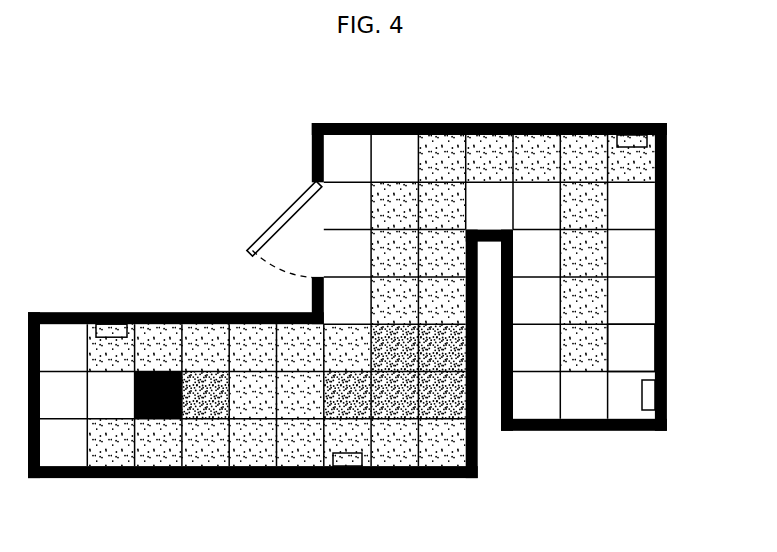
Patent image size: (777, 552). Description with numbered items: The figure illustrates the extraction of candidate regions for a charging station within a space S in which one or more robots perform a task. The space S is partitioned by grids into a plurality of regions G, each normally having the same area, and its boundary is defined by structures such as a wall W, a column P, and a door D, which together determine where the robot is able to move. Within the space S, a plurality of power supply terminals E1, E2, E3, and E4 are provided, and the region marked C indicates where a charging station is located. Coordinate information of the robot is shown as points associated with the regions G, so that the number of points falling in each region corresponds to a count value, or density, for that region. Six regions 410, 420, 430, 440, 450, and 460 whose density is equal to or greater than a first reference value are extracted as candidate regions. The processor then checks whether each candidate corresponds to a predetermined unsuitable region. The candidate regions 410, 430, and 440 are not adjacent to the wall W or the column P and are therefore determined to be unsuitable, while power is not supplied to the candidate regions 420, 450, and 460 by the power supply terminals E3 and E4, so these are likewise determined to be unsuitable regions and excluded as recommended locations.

The space S is at (106, 128).
The wall W is at (108, 478).
The regions G is at (64, 330).
The column P is at (163, 418).
The door D is at (280, 215).
The region in which a charging station is located C is at (631, 347).
The power supply terminal E1 is at (655, 393).
The power supply terminal E2 is at (632, 135).
The power supply terminal E3 is at (347, 466).
The power supply terminal E4 is at (112, 324).
The candidate region 410 is at (385, 345).
The candidate region 420 is at (465, 352).
The candidate region 430 is at (320, 397).
The candidate region 440 is at (400, 412).
The candidate region 450 is at (445, 412).
The candidate region 460 is at (214, 412).